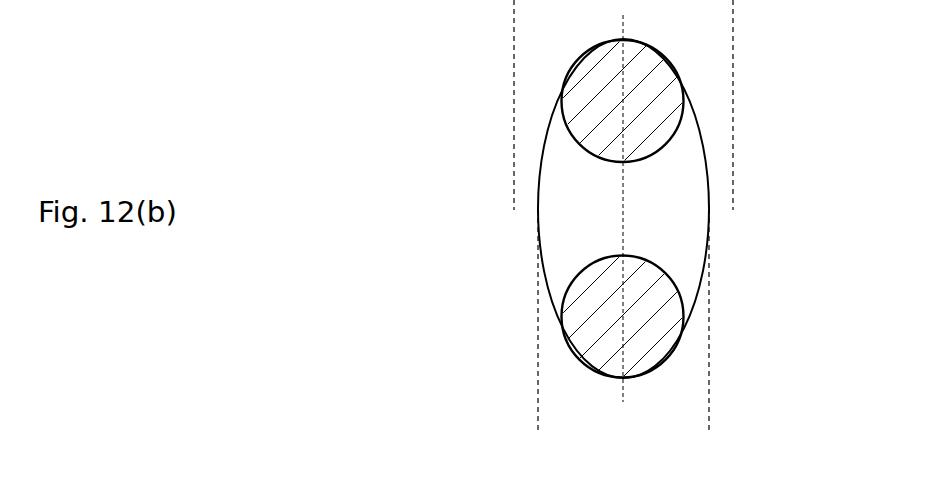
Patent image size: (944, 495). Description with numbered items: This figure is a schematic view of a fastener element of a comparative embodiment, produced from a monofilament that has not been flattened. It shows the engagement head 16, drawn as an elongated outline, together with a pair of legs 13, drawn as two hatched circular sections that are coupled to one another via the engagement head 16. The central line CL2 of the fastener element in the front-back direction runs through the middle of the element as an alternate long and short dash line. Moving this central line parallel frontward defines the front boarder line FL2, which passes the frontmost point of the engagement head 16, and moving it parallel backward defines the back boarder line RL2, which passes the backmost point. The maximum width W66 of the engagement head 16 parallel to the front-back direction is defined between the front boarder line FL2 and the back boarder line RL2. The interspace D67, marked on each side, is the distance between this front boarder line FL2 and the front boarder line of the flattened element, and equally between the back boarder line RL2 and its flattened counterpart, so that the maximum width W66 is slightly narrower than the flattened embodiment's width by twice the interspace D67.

The legs 13 is at (666, 121).
The engagement head 16 is at (644, 217).
The central line CL2 is at (651, 201).
The back boarder line RL2 is at (507, 320).
The front boarder line FL2 is at (738, 320).
The interspace D67 is at (580, 209).
The maximum width W66 is at (708, 429).